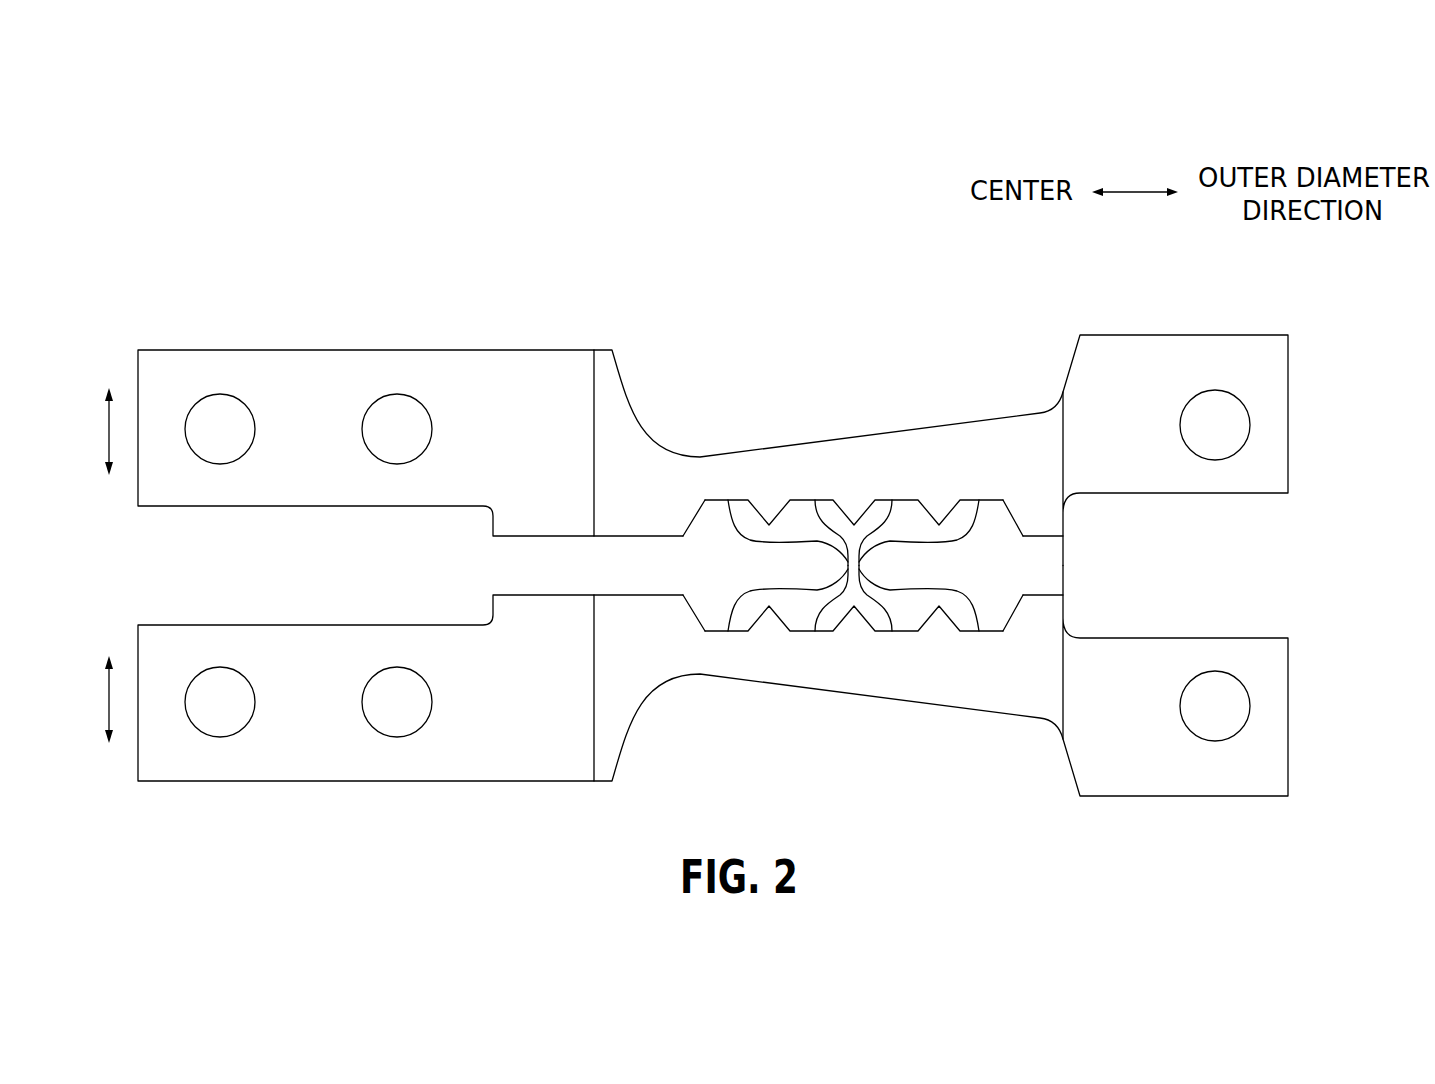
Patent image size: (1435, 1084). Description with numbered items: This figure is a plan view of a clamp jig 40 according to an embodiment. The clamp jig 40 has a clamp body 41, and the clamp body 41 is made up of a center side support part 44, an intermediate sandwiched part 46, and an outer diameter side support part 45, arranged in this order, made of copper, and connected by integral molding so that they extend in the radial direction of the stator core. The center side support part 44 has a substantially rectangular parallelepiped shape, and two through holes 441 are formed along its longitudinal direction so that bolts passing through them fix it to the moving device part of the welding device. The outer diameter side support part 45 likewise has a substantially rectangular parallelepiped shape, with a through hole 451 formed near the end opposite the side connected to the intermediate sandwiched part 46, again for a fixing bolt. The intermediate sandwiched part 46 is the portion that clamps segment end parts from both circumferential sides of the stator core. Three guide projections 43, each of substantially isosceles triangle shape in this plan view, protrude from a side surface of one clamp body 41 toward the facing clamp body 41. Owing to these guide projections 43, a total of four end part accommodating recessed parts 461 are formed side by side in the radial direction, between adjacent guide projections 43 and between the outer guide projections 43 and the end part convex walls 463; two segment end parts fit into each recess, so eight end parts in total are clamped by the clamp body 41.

The clamp jig 40 is at (190, 165).
The clamp body 41 is at (958, 412).
The guide projection 43 is at (768, 513).
The center side support part 44 is at (366, 568).
The through hole 441 is at (387, 443).
The outer diameter side support part 45 is at (1215, 567).
The through hole 451 is at (1240, 427).
The intermediate sandwiched part 46 is at (833, 568).
The end part accommodating recessed part 461 is at (853, 565).
The end part convex wall 463 is at (697, 519).